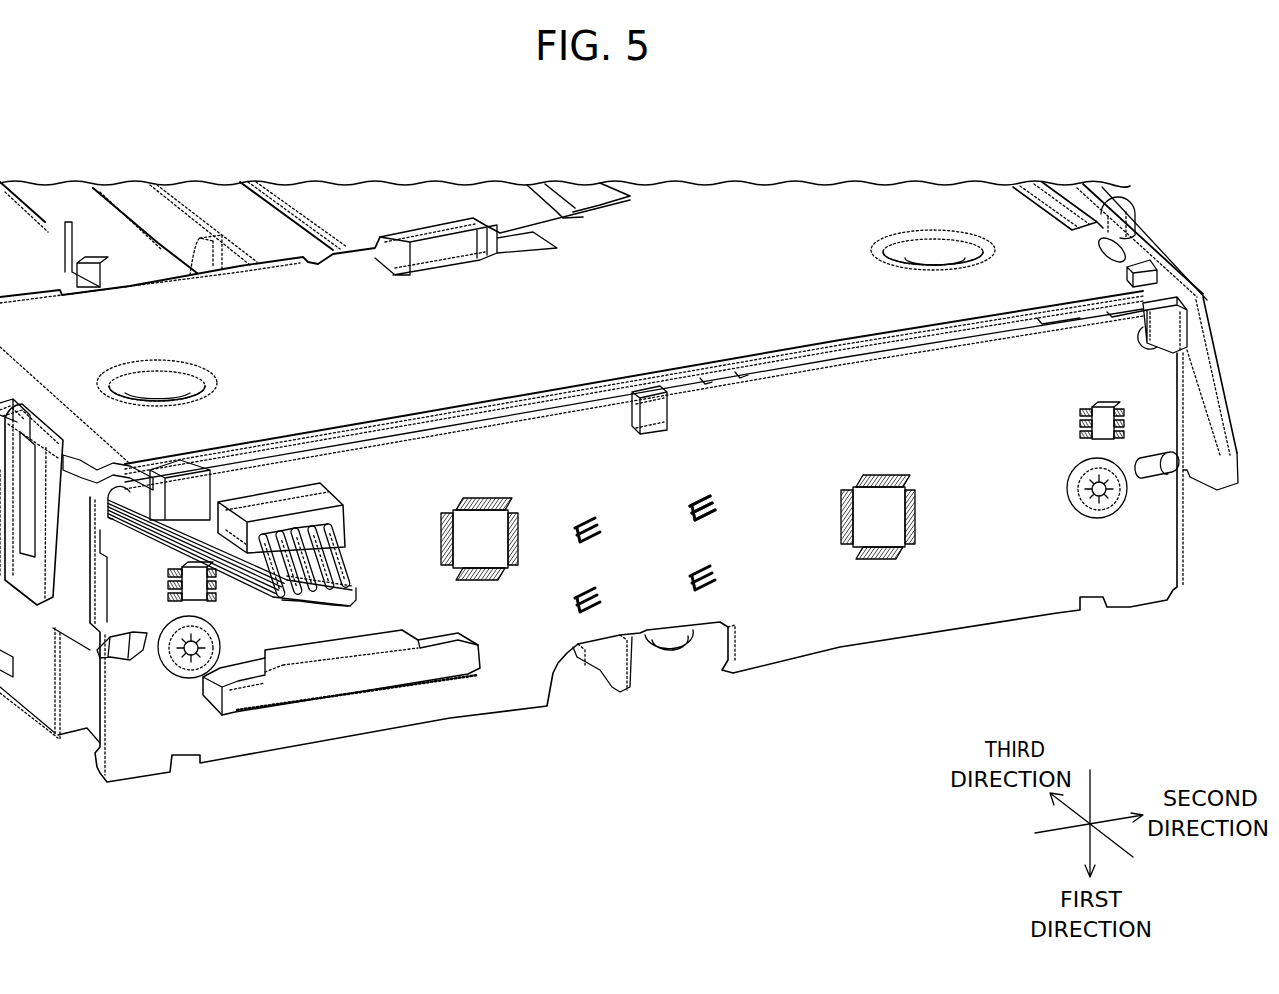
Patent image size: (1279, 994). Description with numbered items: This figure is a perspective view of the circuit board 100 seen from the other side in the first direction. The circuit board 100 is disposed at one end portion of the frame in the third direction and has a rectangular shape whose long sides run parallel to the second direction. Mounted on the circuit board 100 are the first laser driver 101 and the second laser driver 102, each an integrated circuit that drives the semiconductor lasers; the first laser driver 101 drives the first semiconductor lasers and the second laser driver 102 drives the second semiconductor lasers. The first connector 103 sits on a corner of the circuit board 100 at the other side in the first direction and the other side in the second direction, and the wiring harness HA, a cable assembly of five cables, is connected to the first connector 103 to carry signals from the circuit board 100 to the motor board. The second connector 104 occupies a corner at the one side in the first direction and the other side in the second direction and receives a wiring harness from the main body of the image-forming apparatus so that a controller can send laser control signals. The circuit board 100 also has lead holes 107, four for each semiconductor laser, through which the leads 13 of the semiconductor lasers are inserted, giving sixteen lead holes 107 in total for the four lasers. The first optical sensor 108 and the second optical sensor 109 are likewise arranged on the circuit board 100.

The circuit board 100 is at (107, 782).
The first laser driver 101 is at (887, 533).
The second laser driver 102 is at (493, 553).
The first connector 103 is at (288, 498).
The second connector 104 is at (388, 672).
The lead holes 107 is at (698, 500).
The first optical sensor 108 is at (1107, 436).
The second optical sensor 109 is at (207, 597).
The leads 13 is at (600, 535).
The wiring harness HA is at (315, 602).